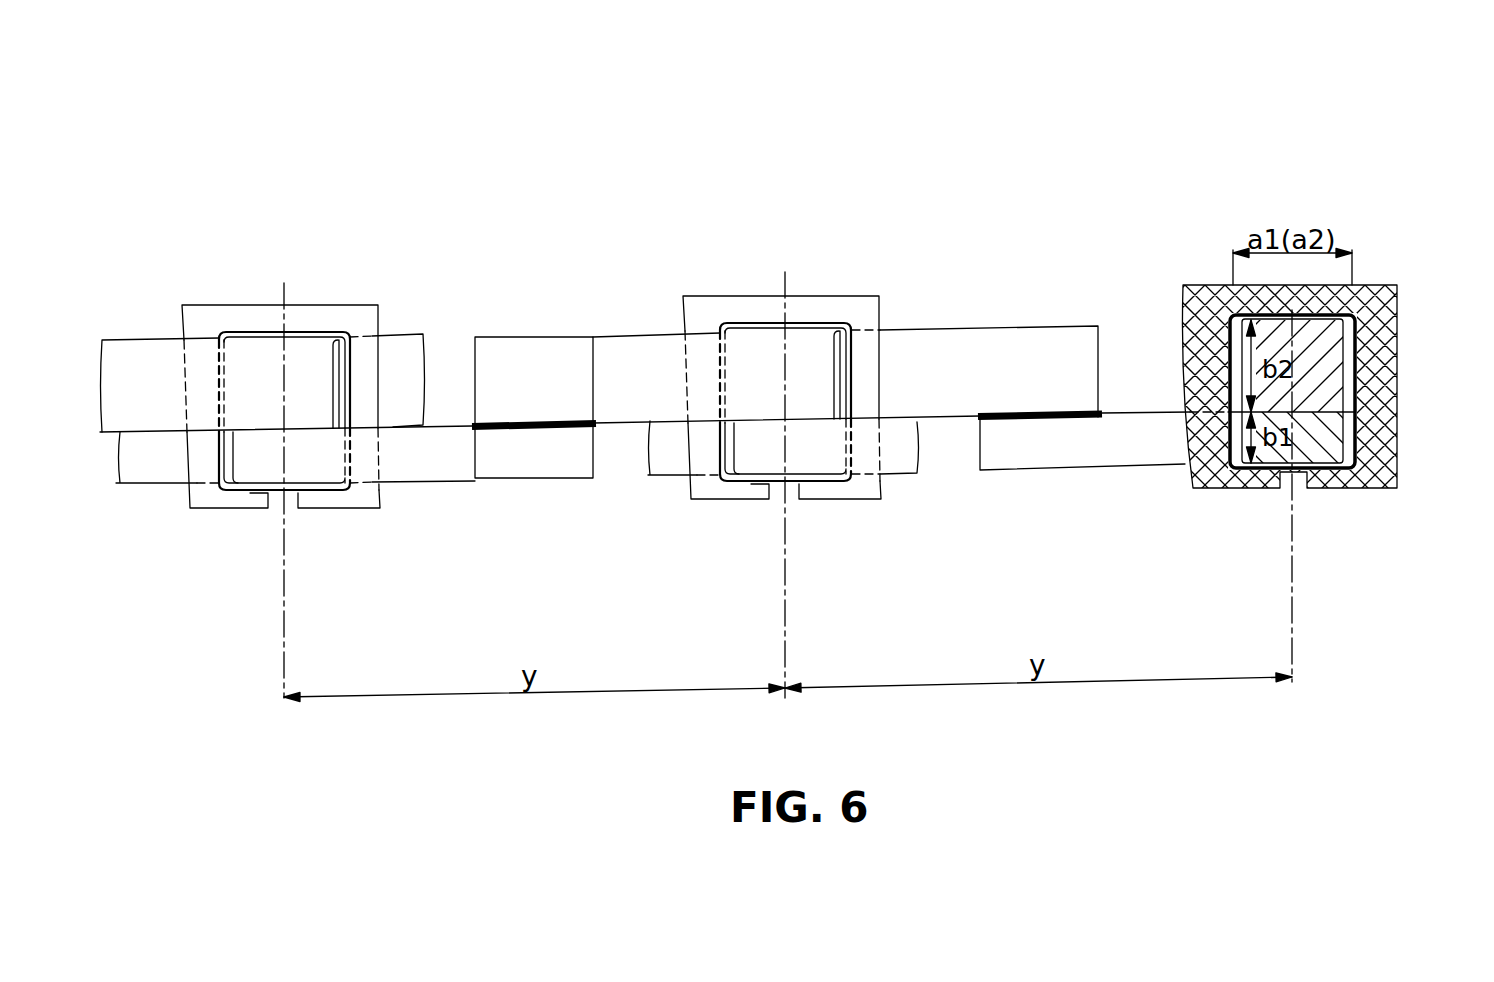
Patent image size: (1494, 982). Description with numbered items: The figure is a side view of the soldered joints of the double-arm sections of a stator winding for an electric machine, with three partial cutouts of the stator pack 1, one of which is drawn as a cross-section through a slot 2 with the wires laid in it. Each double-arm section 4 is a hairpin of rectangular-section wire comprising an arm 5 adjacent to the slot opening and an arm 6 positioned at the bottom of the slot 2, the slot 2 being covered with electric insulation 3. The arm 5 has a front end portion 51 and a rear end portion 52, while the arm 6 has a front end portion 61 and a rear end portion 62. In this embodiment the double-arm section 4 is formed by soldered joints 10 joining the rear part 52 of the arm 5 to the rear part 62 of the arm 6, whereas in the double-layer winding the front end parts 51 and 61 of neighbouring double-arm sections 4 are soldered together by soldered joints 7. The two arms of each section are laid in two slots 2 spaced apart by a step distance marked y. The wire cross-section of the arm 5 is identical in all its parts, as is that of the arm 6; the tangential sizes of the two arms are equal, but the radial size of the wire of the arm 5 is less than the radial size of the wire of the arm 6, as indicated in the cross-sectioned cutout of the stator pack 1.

The stator pack 1 is at (1375, 303).
The slot 2 is at (1326, 304).
The electric insulation 3 is at (1256, 316).
The double-arm section 4 is at (1102, 285).
The arm adjacent to opening 5 is at (1310, 438).
The arm at the bottom of the slot 6 is at (1318, 384).
The soldered joint 7 is at (522, 420).
The soldered joint 10 is at (1013, 412).
The front end portion 51 is at (400, 453).
The rear end portion 52 is at (1122, 442).
The front end portion 61 is at (643, 378).
The rear end portion 62 is at (923, 370).